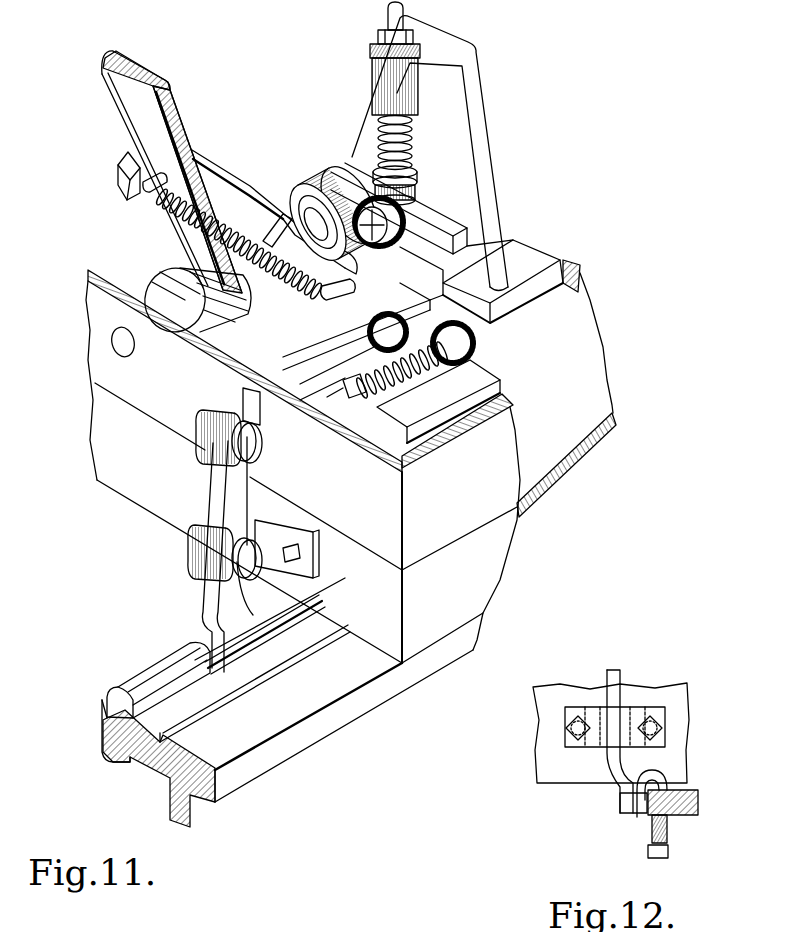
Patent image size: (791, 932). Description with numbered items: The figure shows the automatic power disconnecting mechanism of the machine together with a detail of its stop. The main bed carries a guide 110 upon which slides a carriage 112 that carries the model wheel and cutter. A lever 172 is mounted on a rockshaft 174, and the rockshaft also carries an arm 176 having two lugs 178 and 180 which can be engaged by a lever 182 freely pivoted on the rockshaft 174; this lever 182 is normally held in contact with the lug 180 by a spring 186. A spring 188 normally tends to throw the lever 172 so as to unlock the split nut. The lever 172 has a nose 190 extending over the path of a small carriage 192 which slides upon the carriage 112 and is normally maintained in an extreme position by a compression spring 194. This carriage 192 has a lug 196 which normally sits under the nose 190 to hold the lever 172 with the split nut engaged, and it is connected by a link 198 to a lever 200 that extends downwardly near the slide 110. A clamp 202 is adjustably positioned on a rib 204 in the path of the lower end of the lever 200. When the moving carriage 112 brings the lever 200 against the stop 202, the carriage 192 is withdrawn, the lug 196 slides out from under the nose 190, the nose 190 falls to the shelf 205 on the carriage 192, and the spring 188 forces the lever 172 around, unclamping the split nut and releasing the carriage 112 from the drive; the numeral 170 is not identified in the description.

In FIG. 11, the guide 110 is at (288, 702).
In FIG. 11, the carriage 112 is at (351, 461).
In FIG. 11, the top bar 170 is at (480, 232).
In FIG. 11, the lever 172 is at (430, 220).
In FIG. 11, the rockshaft 174 is at (310, 190).
In FIG. 11, the arm 176 is at (225, 193).
In FIG. 11, the lug 178 is at (128, 180).
In FIG. 11, the lug 180 is at (267, 240).
In FIG. 11, the lever 182 is at (140, 112).
In FIG. 11, the spring 186 is at (255, 265).
In FIG. 11, the spring 188 is at (410, 138).
In FIG. 11, the nose 190 is at (480, 238).
In FIG. 11, the carriage 192 is at (415, 377).
In FIG. 11, the compression spring 194 is at (400, 390).
In FIG. 11, the lug 196 is at (505, 261).
In FIG. 11, the link 198 is at (356, 380).
In FIG. 11, the lever 200 is at (227, 500).
In FIG. 12, the lever 200 is at (610, 683).
In FIG. 11, the clamp 202 is at (128, 683).
In FIG. 12, the clamp 202 is at (638, 828).
In FIG. 11, the rib 204 is at (108, 717).
In FIG. 12, the rib 204 is at (657, 787).
In FIG. 11, the shelf 205 is at (493, 249).